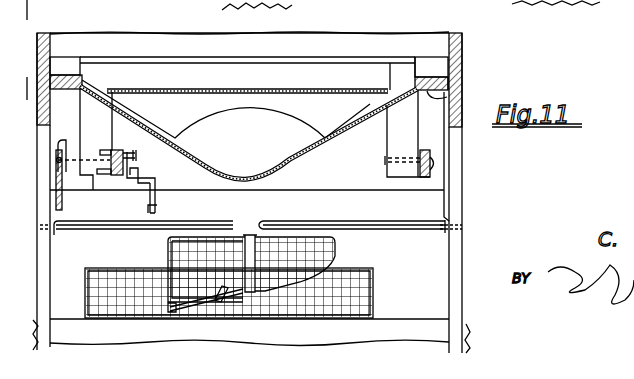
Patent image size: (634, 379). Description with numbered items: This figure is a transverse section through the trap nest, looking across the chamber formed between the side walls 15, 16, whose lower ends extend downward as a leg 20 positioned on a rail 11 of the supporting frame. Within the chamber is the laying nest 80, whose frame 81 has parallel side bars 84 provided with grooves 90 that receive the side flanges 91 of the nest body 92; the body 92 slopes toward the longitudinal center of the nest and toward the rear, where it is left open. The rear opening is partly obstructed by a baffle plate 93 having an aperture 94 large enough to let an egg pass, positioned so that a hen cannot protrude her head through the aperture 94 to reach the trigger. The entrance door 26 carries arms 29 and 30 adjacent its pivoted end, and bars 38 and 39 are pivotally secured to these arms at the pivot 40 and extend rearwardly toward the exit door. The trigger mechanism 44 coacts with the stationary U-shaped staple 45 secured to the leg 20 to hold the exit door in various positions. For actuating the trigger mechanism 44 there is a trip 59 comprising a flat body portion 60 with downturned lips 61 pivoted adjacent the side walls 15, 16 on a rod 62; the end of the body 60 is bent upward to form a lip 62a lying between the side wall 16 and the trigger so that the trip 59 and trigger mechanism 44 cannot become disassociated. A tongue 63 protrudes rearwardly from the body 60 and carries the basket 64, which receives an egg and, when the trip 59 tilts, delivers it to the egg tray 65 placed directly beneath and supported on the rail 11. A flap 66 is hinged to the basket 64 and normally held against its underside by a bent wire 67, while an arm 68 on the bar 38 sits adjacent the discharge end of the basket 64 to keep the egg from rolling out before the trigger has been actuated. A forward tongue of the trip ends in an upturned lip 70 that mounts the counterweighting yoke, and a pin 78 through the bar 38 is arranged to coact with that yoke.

The rail 11 is at (396, 328).
The side wall 15 is at (452, 33).
The side wall 16 is at (40, 32).
The leg 20 is at (46, 302).
The door 26 is at (100, 35).
The arm 29 is at (103, 120).
The arm 30 is at (412, 138).
The bar 38 is at (116, 150).
The bar 39 is at (433, 173).
The pivot 40 is at (434, 163).
The trigger mechanism 44 is at (58, 166).
The staple 45 is at (58, 142).
The trip 59 is at (304, 196).
The body portion 60 is at (365, 197).
The downturned lip 61 is at (55, 233).
The rod 62 is at (91, 226).
The lip 62a is at (63, 206).
The tongue 63 is at (253, 235).
The basket 64 is at (334, 250).
The egg tray 65 is at (373, 284).
The flap 66 is at (203, 316).
The bent wire 67 is at (217, 300).
The arm 68 is at (158, 202).
The lip 70 is at (146, 182).
The pin 78 is at (136, 156).
The laying nest 80 is at (296, 75).
The frame 81 is at (430, 55).
The side bar 84 is at (57, 62).
The groove 90 is at (463, 82).
The side flange 91 is at (458, 92).
The nest body 92 is at (391, 75).
The baffle plate 93 is at (233, 92).
The aperture 94 is at (288, 117).